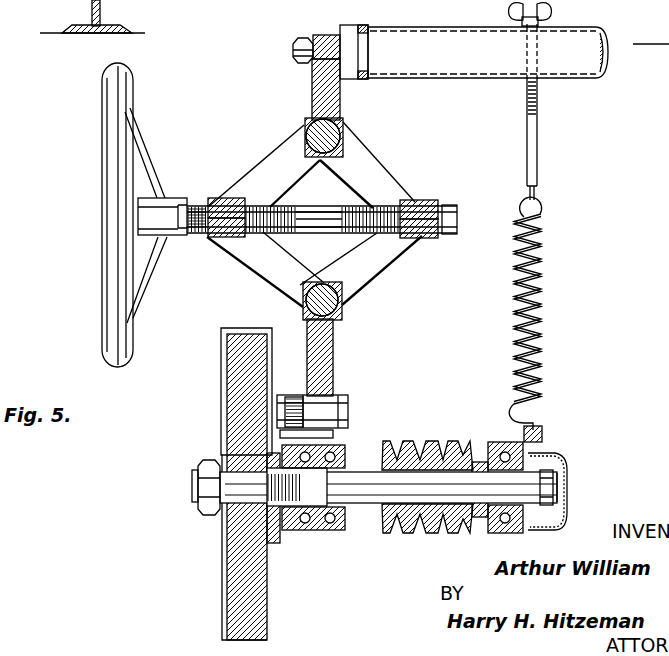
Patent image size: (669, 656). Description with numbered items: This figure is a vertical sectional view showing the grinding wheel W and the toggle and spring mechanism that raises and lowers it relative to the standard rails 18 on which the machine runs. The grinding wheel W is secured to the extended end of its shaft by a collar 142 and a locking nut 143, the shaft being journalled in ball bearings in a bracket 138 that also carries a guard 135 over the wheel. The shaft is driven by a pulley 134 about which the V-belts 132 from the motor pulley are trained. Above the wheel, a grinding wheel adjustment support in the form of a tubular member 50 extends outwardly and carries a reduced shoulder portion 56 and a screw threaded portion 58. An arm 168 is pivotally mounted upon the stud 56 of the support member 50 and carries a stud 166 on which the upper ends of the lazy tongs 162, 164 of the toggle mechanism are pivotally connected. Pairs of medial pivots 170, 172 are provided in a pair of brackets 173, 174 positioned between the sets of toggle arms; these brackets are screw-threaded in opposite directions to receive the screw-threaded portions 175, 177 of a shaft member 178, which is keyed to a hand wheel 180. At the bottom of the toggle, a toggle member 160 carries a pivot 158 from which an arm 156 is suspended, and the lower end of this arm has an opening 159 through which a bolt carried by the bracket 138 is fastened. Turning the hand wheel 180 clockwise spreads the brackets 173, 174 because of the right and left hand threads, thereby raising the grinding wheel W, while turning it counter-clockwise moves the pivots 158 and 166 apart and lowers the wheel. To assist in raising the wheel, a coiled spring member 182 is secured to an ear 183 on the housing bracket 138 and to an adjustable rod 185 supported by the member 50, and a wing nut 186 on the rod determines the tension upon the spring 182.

The standard rail 18 is at (102, 12).
The tubular member 50 is at (578, 76).
The reduced shoulder portion 56 is at (323, 36).
The screw threaded portion 58 is at (293, 50).
The arm 168 is at (312, 95).
The stud 166 is at (346, 126).
The pivot 158 is at (343, 308).
The lazy tong 162 is at (268, 170).
The lazy tong 164 is at (268, 271).
The toggle member 160 is at (389, 185).
The screw-threaded portion 177 is at (380, 236).
The screw-threaded portion 175 is at (278, 208).
The shaft member 178 is at (328, 233).
The bracket 173 is at (226, 199).
The medial pivot 170 is at (218, 240).
The bracket 174 is at (417, 198).
The medial pivot 172 is at (456, 217).
The hand wheel 180 is at (150, 213).
The arm 156 is at (326, 363).
The opening 159 is at (316, 406).
The guard 135 is at (221, 407).
The collar 142 is at (221, 537).
The locking nut 143 is at (190, 487).
The pulley 134 is at (443, 449).
The V-belts 132 is at (446, 538).
The bracket 138 is at (503, 442).
The ear 183 is at (546, 438).
The coiled spring member 182 is at (546, 302).
The adjustable rod 185 is at (538, 157).
The wing nut 186 is at (548, 12).
The grinding wheel W is at (268, 617).